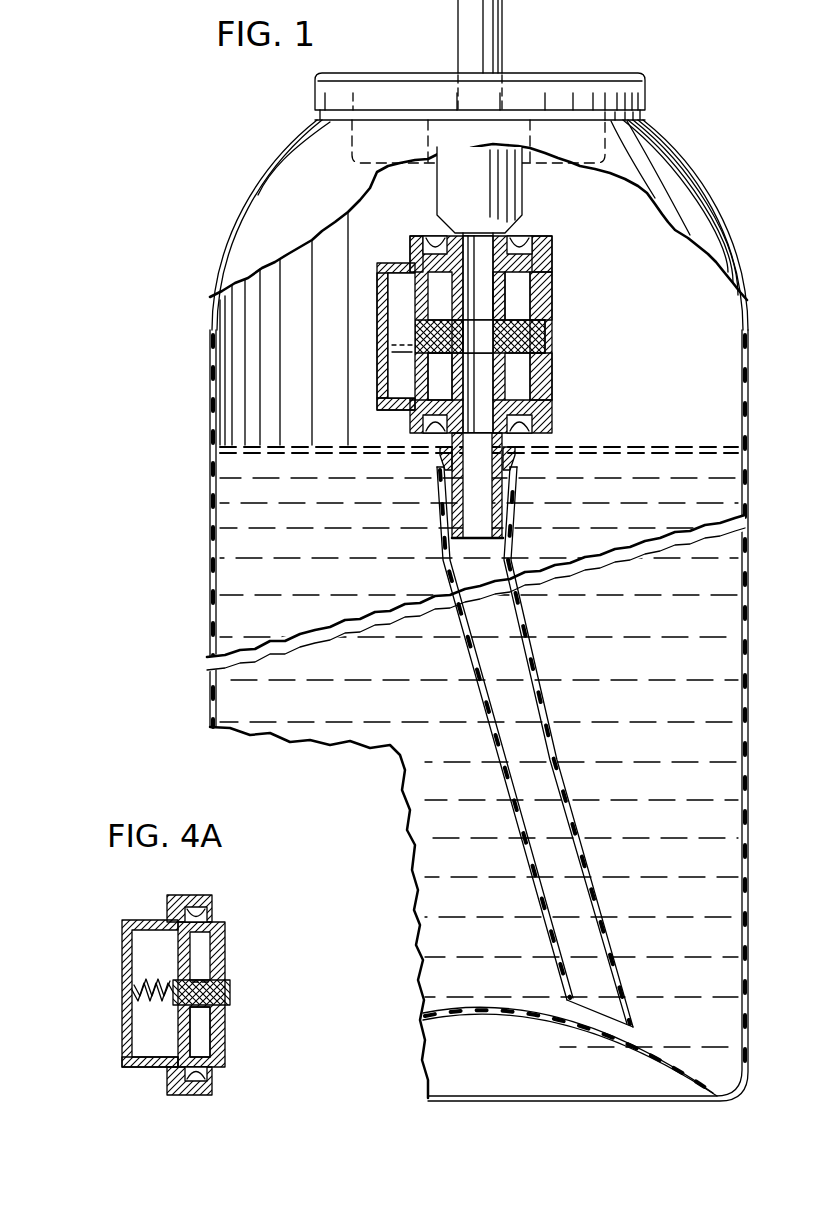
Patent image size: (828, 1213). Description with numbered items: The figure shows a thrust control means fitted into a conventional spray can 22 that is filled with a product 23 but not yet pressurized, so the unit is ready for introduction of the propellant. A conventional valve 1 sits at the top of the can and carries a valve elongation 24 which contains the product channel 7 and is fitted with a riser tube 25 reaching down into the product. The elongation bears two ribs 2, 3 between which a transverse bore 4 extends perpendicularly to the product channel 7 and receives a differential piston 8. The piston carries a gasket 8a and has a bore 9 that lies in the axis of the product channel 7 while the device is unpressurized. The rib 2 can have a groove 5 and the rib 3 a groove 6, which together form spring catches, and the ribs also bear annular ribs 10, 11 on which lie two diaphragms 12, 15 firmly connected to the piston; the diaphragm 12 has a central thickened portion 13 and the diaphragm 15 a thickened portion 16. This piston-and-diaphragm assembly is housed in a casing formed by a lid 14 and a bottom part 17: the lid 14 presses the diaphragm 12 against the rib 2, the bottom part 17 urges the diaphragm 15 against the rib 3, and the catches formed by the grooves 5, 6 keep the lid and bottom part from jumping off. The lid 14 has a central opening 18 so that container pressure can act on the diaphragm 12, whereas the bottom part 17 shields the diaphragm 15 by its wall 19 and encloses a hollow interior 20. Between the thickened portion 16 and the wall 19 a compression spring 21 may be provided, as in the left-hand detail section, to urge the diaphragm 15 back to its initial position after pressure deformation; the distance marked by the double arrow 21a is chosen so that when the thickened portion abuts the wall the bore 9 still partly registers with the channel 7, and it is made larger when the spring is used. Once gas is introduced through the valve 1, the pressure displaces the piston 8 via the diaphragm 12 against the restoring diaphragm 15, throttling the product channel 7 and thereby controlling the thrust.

In FIG. 1, the valve 1 is at (463, 172).
In FIG. 1, the rib 2 is at (518, 280).
In FIG. 4A, the rib 2 is at (200, 935).
In FIG. 1, the rib 3 is at (447, 397).
In FIG. 4A, the rib 3 is at (222, 1075).
In FIG. 1, the transverse bore 4 is at (450, 338).
In FIG. 1, the groove 5 is at (440, 247).
In FIG. 4A, the groove 5 is at (200, 918).
In FIG. 1, the groove 6 is at (423, 432).
In FIG. 1, the product channel 7 is at (480, 296).
In FIG. 1, the differential piston 8 is at (513, 337).
In FIG. 4A, the differential piston 8 is at (228, 990).
In FIG. 1, the gasket 8a is at (502, 318).
In FIG. 1, the bore 9 is at (483, 354).
In FIG. 1, the annular rib 10 is at (550, 251).
In FIG. 1, the annular rib 11 is at (414, 252).
In FIG. 1, the diaphragm 12 is at (540, 373).
In FIG. 1, the thickened portion 13 is at (545, 329).
In FIG. 1, the lid 14 is at (553, 418).
In FIG. 1, the diaphragm 15 is at (405, 350).
In FIG. 4A, the diaphragm 15 is at (185, 1030).
In FIG. 1, the thickened portion 16 is at (407, 333).
In FIG. 4A, the thickened portion 16 is at (190, 975).
In FIG. 1, the bottom part 17 is at (380, 406).
In FIG. 4A, the bottom part 17 is at (124, 1050).
In FIG. 1, the central opening 18 is at (548, 296).
In FIG. 1, the wall 19 is at (378, 318).
In FIG. 1, the hollow interior 20 is at (383, 278).
In FIG. 4A, the hollow interior 20 is at (158, 962).
In FIG. 4A, the compression spring 21 is at (135, 1003).
In FIG. 1, the double arrow 21a is at (400, 350).
In FIG. 1, the spray can 22 is at (677, 202).
In FIG. 1, the product 23 is at (712, 493).
In FIG. 1, the valve elongation 24 is at (503, 515).
In FIG. 1, the riser tube 25 is at (555, 732).